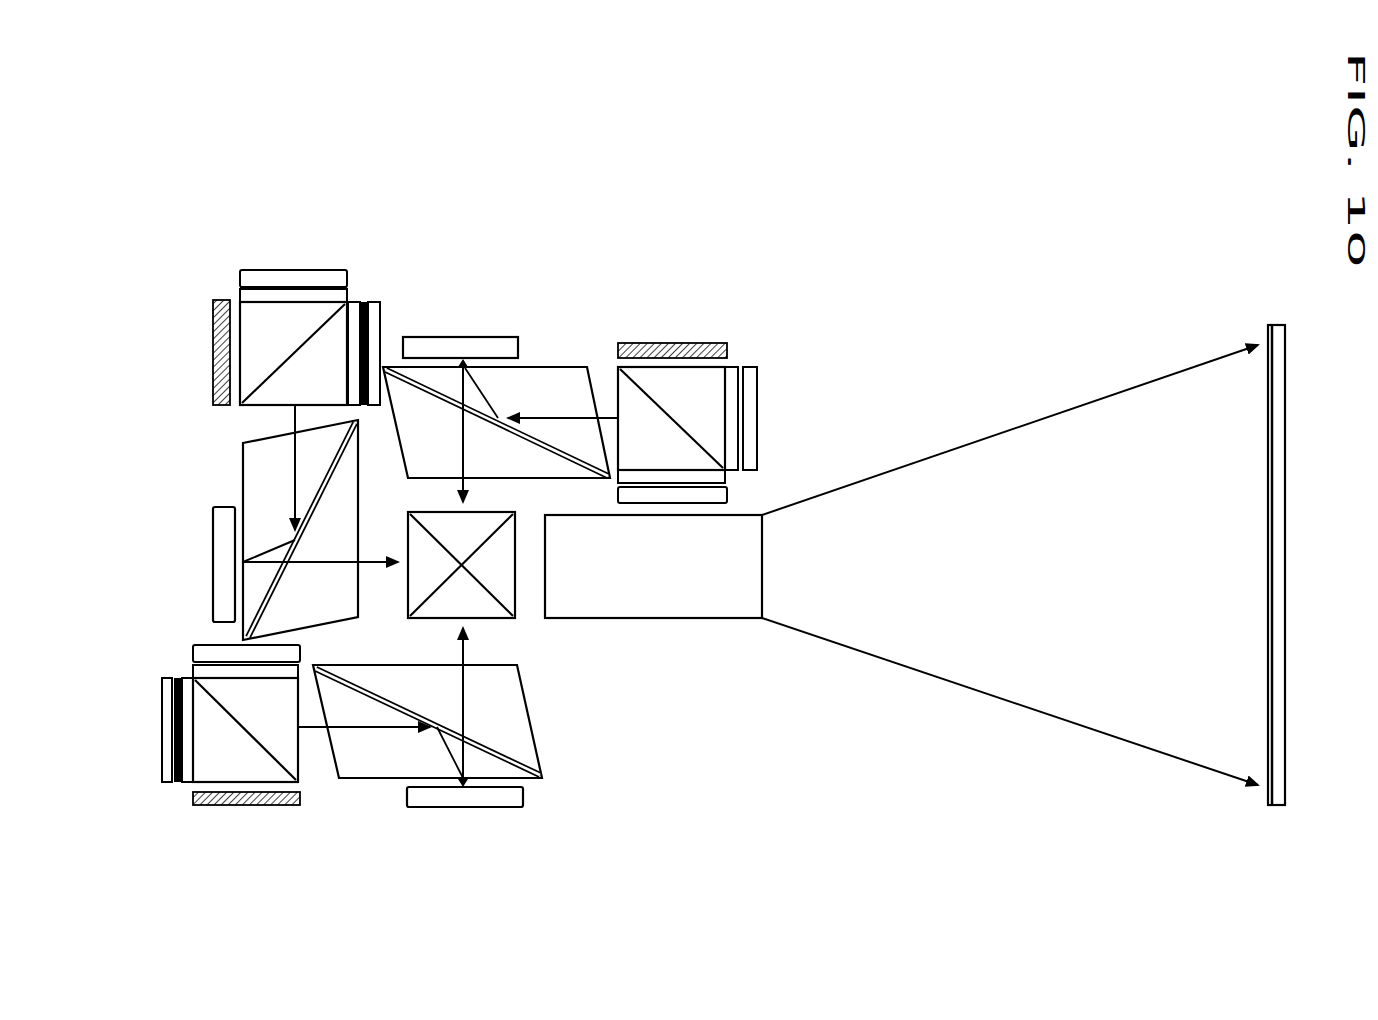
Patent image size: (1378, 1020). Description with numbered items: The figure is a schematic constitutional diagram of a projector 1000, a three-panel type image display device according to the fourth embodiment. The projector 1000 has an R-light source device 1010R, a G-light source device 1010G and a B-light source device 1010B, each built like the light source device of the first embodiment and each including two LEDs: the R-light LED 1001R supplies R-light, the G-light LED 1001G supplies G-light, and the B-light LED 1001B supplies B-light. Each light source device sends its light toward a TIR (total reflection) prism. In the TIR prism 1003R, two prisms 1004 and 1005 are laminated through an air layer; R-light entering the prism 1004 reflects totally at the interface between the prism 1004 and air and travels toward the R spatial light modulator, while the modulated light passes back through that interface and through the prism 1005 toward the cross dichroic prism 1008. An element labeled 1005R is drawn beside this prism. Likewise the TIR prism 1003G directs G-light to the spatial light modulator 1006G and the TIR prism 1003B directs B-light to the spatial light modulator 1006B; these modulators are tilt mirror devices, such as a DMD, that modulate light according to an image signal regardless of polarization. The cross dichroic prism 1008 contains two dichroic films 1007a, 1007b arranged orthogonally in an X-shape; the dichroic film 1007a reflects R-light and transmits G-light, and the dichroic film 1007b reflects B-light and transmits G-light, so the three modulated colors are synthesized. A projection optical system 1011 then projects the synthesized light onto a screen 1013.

The projector 1000 is at (925, 305).
The G-light LED 1001G is at (368, 302).
The R-light LED 1001R is at (733, 490).
The B-light LED 1001B is at (157, 687).
The TIR prism 1003G is at (249, 478).
The TIR prism 1003R is at (588, 350).
The TIR prism 1003B is at (370, 770).
The prism 1004 is at (545, 378).
The prism 1005 is at (407, 478).
The red polarizing plate 1005R is at (462, 348).
The spatial light modulator 1006G is at (218, 532).
The spatial light modulator 1006B is at (525, 797).
The dichroic film 1007a is at (503, 600).
The dichroic film 1007b is at (418, 600).
The cross dichroic prism 1008 is at (492, 620).
The G-light source device 1010G is at (235, 258).
The R-light source device 1010R is at (751, 335).
The B-light source device 1010B is at (288, 826).
The projection optical system 1011 is at (718, 621).
The screen 1013 is at (1277, 325).